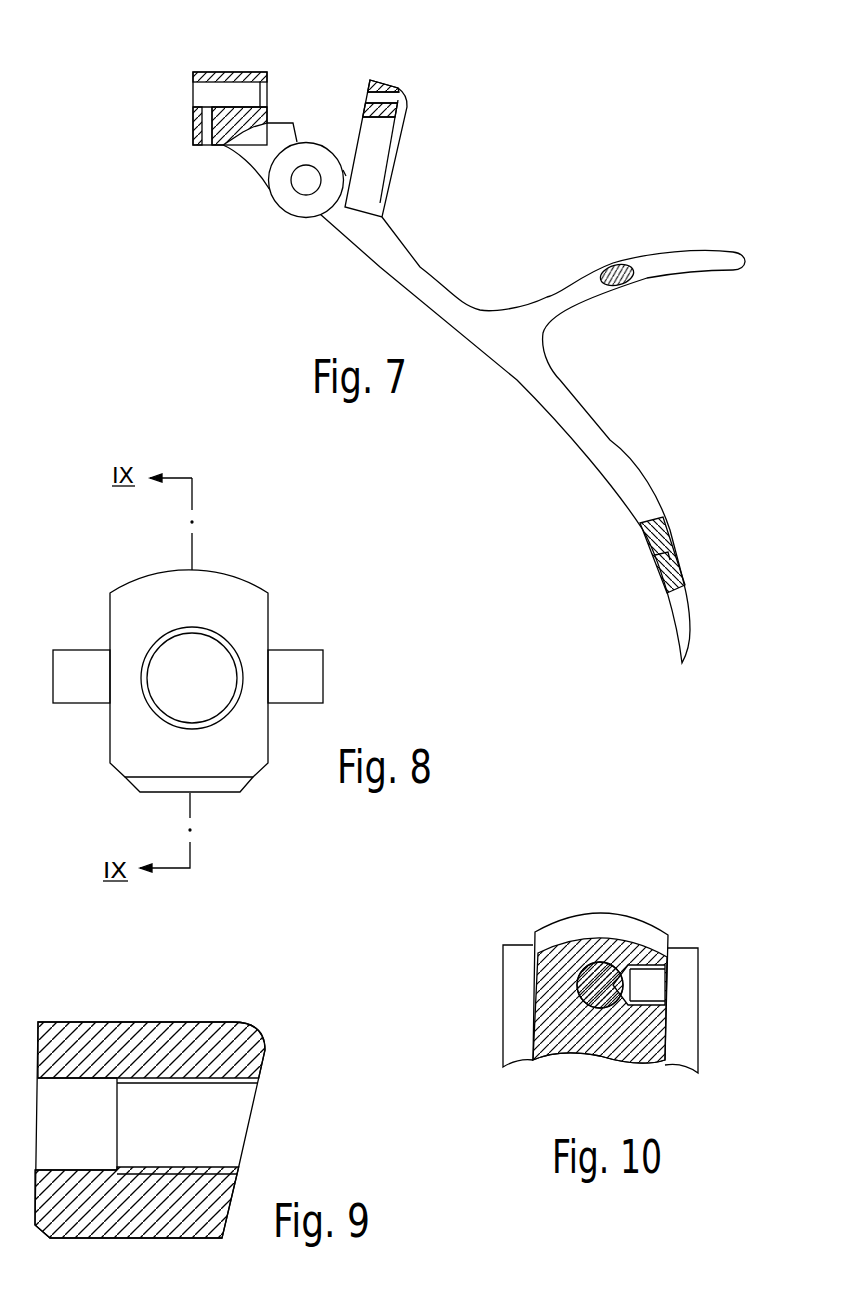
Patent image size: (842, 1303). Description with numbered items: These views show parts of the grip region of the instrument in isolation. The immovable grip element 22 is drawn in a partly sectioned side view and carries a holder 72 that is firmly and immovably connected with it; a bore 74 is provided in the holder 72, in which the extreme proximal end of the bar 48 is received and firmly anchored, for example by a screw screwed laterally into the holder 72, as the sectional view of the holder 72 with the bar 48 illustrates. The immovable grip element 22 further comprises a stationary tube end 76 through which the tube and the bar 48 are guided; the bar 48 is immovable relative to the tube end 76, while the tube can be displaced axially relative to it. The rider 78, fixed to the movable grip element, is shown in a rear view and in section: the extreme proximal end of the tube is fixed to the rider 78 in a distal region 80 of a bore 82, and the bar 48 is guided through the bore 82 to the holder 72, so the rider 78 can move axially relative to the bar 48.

In FIG. 7, the immovable grip element 22 is at (427, 257).
In FIG. 7, the holder 72 is at (372, 148).
In FIG. 10, the holder 72 is at (548, 960).
In FIG. 7, the bore 74 is at (367, 97).
In FIG. 7, the stationary tube end 76 is at (218, 72).
In FIG. 8, the rider 78 is at (250, 622).
In FIG. 9, the rider 78 is at (250, 1050).
In FIG. 9, the distal region 80 is at (77, 1160).
In FIG. 8, the bore 82 is at (175, 690).
In FIG. 9, the bore 82 is at (187, 1122).
In FIG. 10, the bar 48 is at (598, 988).